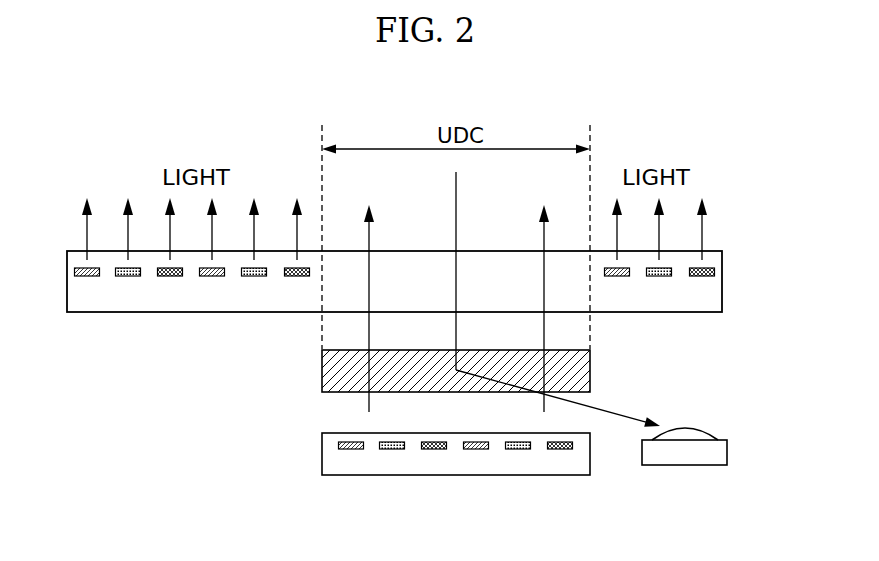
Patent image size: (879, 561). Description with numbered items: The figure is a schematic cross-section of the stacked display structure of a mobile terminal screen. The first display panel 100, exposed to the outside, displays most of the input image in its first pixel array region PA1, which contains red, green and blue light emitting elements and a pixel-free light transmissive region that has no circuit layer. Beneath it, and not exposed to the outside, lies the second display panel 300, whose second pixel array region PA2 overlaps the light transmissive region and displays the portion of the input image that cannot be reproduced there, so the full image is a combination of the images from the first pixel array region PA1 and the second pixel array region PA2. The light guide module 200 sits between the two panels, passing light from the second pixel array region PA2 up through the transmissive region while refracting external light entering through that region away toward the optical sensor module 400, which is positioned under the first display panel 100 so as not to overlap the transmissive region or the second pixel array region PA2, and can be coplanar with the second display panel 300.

The first display panel 100 is at (724, 276).
The light guide module 200 is at (590, 365).
The second display panel 300 is at (575, 475).
The optical sensor module 400 is at (683, 465).
The first pixel array region PA1 is at (193, 300).
The second pixel array region PA2 is at (410, 467).